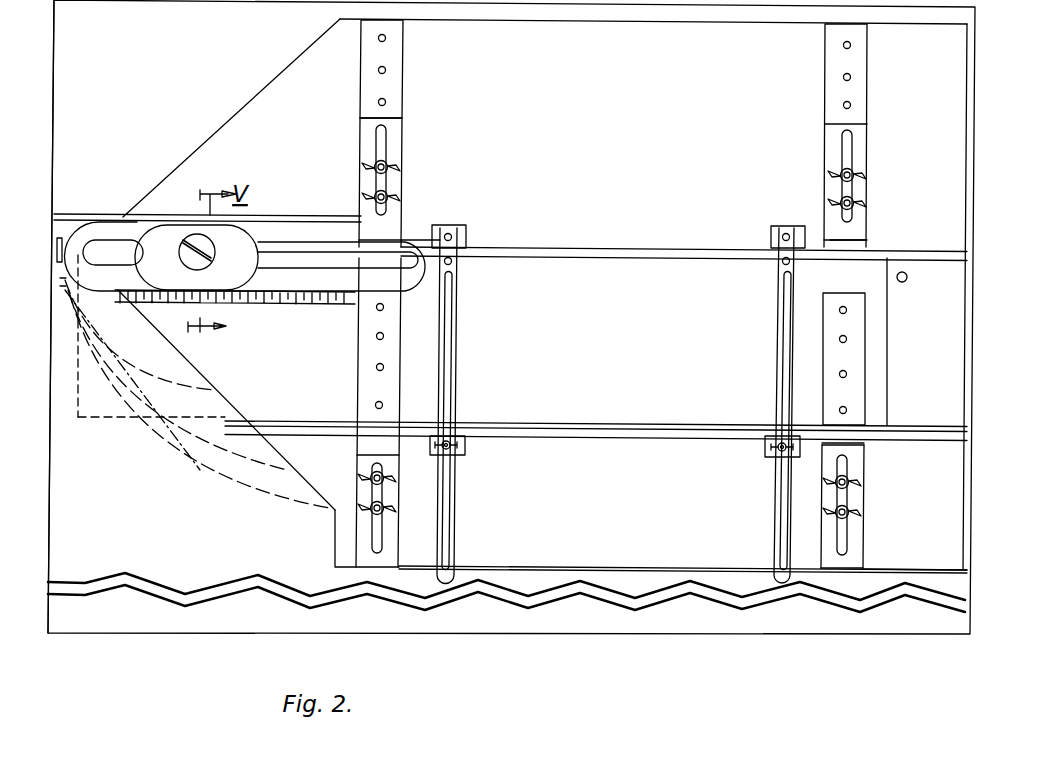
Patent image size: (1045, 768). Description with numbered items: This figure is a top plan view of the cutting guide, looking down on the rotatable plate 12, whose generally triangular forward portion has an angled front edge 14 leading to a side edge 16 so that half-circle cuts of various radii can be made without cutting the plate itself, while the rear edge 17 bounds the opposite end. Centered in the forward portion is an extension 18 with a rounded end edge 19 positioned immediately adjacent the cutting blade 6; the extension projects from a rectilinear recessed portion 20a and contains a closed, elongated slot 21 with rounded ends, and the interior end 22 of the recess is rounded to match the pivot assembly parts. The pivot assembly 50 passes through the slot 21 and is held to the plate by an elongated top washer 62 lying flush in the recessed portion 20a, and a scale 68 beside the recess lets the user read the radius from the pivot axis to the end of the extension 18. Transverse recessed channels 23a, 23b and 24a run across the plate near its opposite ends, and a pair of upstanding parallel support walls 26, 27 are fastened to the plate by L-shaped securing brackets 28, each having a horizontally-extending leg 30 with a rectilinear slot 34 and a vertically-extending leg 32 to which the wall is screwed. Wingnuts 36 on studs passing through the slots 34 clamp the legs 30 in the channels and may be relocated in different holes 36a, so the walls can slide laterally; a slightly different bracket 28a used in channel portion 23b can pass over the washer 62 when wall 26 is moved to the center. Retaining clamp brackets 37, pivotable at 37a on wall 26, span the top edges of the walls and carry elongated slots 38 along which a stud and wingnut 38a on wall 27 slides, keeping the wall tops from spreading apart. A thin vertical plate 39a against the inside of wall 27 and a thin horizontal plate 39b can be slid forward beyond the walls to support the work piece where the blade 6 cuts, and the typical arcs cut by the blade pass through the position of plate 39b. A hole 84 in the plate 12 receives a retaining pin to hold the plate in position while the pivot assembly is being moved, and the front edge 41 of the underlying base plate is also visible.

The cutting blade 6 is at (57, 248).
The rotatable plate 12 is at (668, 58).
The front edge 14 is at (276, 72).
The side edge 16 is at (536, 22).
The rear edge 17 is at (967, 304).
The extension 18 is at (94, 223).
The rounded end edge 19 is at (69, 233).
The rectilinear recessed portion 20a is at (310, 214).
The elongated slot 21 is at (118, 243).
The rounded interior end 22 is at (418, 284).
The recessed channel 23a is at (400, 547).
The recessed channel portion 23b is at (403, 100).
The recessed channel 24a is at (859, 559).
The support wall 26 is at (650, 228).
The support wall 27 is at (599, 438).
The L-shaped securing bracket 28 is at (807, 178).
The notched securing bracket 28a is at (403, 154).
The horizontally-extending leg 30 is at (390, 133).
The vertically-extending leg 32 is at (387, 242).
The rectilinear slot 34 is at (382, 186).
The wingnut 36 is at (856, 200).
The holes 36a is at (386, 101).
The retaining clamp bracket 37 is at (467, 390).
The pivot 37a is at (466, 234).
The elongated slot 38 is at (449, 352).
The stud and wingnut 38a is at (465, 447).
The vertically-extending plate 39a is at (586, 427).
The horizontally-extending plate 39b is at (96, 426).
The front edge of base plate 41 is at (54, 68).
The pivot assembly 50 is at (320, 96).
The top washer 62 is at (225, 261).
The scale 68 is at (274, 308).
The hole 84 is at (906, 272).